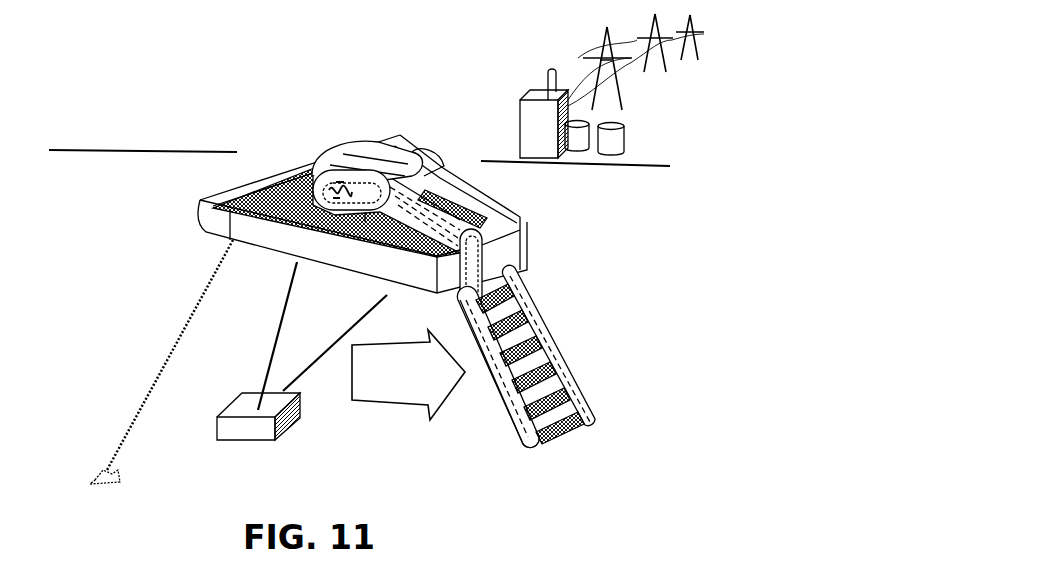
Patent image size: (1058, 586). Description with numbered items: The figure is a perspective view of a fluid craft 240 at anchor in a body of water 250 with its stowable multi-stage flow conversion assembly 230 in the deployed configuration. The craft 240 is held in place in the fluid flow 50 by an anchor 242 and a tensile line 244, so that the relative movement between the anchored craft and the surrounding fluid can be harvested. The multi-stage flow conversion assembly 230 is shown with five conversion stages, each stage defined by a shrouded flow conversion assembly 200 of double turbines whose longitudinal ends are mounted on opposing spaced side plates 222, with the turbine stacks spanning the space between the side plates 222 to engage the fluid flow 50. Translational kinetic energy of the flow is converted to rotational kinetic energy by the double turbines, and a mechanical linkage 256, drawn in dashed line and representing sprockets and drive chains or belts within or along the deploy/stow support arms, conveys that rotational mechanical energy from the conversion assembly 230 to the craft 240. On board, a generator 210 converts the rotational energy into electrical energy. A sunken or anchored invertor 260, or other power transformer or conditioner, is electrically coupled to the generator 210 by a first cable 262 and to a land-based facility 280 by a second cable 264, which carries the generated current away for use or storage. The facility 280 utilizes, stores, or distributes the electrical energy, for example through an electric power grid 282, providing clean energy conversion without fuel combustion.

The fluid flow 50 is at (420, 388).
The shrouded flow conversion assembly 200 is at (587, 398).
The generator 210 is at (326, 178).
The side plates 222 is at (539, 443).
The multi-stage flow conversion assembly 230 is at (563, 376).
The fluid craft 240 is at (382, 152).
The anchor 242 is at (103, 470).
The tensile line 244 is at (155, 377).
The body of water 250 is at (134, 203).
The mechanical linkage 256 is at (499, 407).
The invertor 260 is at (250, 401).
The first cable 262 is at (278, 328).
The second cable 264 is at (313, 363).
The land-based facility 280 is at (518, 118).
The electric power grid 282 is at (659, 89).